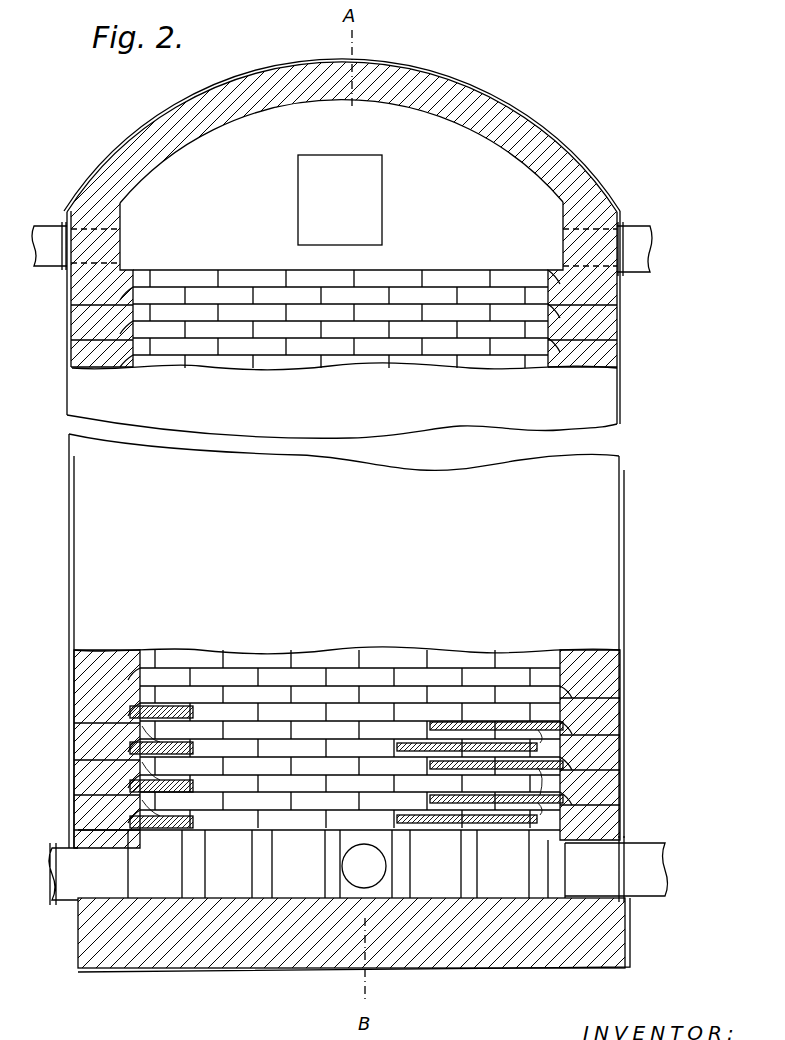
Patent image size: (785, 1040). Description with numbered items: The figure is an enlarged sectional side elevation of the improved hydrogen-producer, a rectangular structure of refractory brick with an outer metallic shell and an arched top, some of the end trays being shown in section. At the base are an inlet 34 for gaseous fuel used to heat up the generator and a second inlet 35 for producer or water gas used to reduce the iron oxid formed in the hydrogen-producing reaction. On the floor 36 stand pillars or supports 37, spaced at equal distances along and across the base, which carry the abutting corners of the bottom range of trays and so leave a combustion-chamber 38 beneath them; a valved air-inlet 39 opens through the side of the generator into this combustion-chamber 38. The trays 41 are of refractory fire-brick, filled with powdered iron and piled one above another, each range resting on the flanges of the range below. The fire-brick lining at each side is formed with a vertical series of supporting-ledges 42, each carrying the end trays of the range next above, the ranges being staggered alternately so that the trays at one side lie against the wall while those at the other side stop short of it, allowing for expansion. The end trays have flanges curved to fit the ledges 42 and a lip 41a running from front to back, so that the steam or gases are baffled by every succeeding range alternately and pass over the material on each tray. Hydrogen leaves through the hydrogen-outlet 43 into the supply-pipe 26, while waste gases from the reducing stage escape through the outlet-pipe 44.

The supply-pipe 26 is at (645, 263).
The inlet for gaseous fuel 34 is at (660, 865).
The inlet for producer or water gas 35 is at (54, 870).
The floor 36 is at (228, 894).
The pillars or supports 37 is at (326, 871).
The combustion-chamber 38 is at (435, 864).
The valved air-inlet 39 is at (366, 864).
The trays 41 is at (224, 832).
The lip 41a is at (143, 832).
The supporting-ledges 42 is at (620, 331).
The hydrogen-outlet 43 is at (575, 266).
The outlet-pipe for waste gases 44 is at (100, 229).